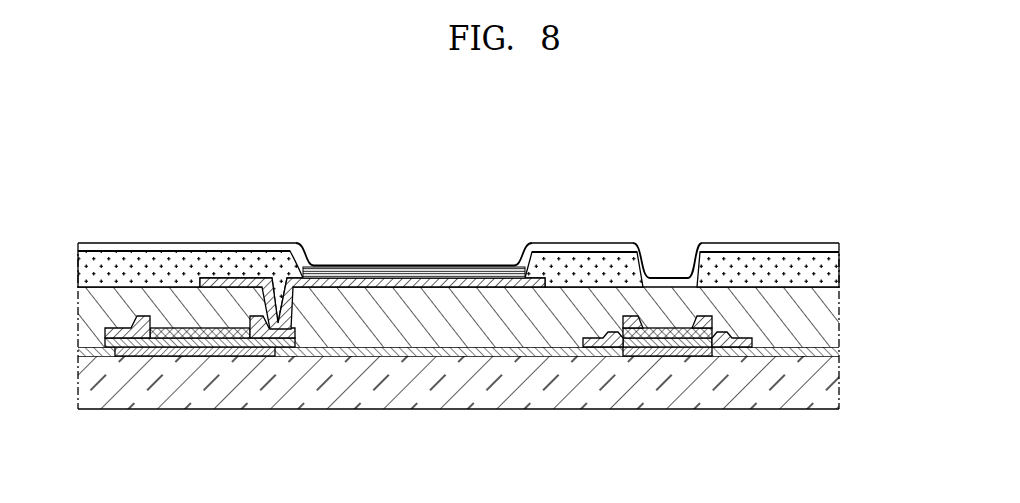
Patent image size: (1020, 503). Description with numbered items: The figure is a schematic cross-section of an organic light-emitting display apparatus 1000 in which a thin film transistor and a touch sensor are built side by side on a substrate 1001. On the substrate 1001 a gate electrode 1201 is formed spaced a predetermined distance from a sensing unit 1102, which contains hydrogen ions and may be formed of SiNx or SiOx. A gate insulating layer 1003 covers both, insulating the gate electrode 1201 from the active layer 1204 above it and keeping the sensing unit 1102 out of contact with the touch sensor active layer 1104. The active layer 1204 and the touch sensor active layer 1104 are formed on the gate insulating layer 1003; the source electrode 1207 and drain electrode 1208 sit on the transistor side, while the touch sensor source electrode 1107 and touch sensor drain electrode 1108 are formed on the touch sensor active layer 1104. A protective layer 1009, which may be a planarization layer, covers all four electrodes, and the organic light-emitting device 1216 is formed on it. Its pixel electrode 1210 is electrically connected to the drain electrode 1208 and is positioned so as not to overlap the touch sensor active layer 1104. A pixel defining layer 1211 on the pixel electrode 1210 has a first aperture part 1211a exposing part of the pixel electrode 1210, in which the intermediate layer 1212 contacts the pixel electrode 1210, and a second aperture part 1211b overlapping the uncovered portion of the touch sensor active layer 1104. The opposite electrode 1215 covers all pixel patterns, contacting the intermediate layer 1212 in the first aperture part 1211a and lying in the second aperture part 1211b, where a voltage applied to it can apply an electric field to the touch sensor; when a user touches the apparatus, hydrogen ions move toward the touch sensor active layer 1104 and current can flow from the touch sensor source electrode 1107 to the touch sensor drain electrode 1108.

The organic light-emitting display apparatus 1000 is at (727, 160).
The substrate 1001 is at (830, 382).
The gate insulating layer 1003 is at (833, 352).
The protective layer 1009 is at (830, 313).
The gate electrode 1201 is at (228, 352).
The active layer 1204 is at (167, 343).
The source electrode 1207 is at (108, 342).
The drain electrode 1208 is at (290, 339).
The sensing unit 1102 is at (692, 352).
The touch sensor active layer 1104 is at (637, 343).
The touch sensor source electrode 1107 is at (598, 343).
The touch sensor drain electrode 1108 is at (740, 343).
The pixel electrode 1210 is at (234, 278).
The intermediate layer 1212 is at (303, 272).
The opposite electrode 1215 is at (235, 145).
The organic light-emitting device 1216 is at (458, 211).
The pixel defining layer 1211 is at (499, 248).
The first aperture part 1211a is at (497, 247).
The second aperture part 1211b is at (654, 250).